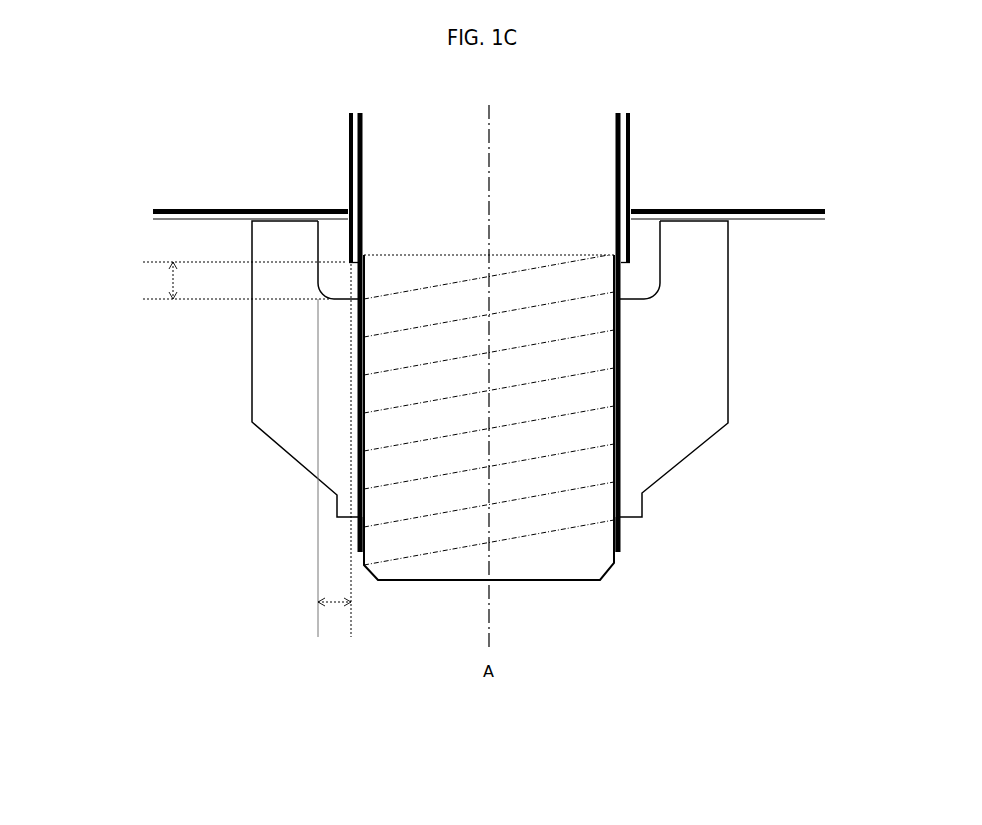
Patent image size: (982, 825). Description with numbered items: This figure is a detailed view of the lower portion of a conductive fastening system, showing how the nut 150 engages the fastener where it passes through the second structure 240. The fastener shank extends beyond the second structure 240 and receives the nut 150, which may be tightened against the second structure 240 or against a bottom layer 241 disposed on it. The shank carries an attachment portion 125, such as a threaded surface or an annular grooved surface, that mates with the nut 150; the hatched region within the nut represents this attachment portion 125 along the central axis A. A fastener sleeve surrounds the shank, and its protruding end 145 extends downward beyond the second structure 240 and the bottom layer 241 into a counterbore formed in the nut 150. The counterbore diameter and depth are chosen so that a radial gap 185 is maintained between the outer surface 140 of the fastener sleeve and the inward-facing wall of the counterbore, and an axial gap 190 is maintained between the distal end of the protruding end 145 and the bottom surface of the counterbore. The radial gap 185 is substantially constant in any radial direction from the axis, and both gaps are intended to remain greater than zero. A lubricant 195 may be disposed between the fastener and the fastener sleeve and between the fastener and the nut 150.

The second structure 240 is at (252, 133).
The bottom layer 241 is at (432, 240).
The outer surface of the fastener sleeve 140 is at (566, 188).
The protruding end of the fastener sleeve 145 is at (575, 332).
The nut 150 is at (556, 379).
The lubricant 195 is at (567, 549).
The attachment portion 125 is at (522, 460).
The axial gap 190 is at (196, 289).
The radial gap 185 is at (300, 474).